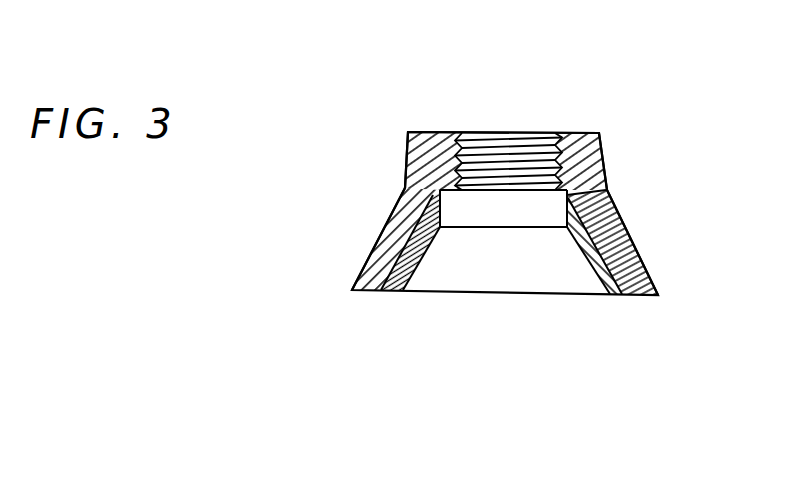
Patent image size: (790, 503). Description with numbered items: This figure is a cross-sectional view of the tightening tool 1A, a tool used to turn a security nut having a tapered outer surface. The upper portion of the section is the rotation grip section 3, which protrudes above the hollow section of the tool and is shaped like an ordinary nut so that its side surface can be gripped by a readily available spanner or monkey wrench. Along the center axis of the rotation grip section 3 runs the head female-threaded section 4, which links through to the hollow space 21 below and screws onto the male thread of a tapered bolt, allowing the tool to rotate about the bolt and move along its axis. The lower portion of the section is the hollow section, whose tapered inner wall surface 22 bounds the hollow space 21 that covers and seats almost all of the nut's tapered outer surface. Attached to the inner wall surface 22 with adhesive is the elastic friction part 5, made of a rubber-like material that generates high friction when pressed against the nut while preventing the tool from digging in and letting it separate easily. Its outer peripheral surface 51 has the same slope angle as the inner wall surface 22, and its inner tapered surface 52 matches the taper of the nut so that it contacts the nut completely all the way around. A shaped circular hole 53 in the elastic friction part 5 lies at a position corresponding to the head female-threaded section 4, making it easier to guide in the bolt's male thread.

The tightening tool 1A is at (334, 97).
The rotation grip section 3 is at (580, 137).
The head female-threaded section 4 is at (487, 133).
The inner wall surface 22 is at (399, 291).
The inner tapered surface 52 is at (425, 291).
The shaped circular hole 53 is at (565, 228).
The hollow space 21 is at (475, 274).
The elastic friction part 5 is at (617, 295).
The outer peripheral surface 51 is at (627, 230).